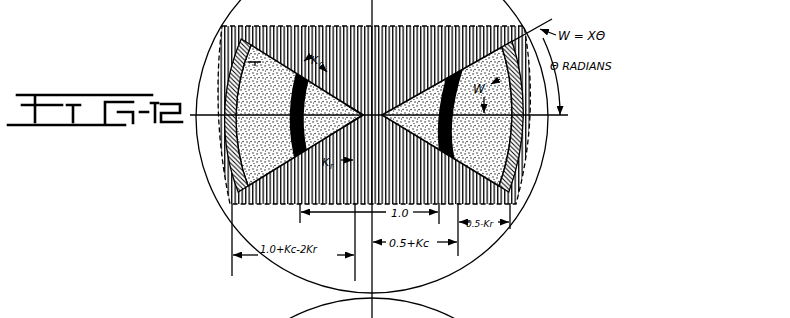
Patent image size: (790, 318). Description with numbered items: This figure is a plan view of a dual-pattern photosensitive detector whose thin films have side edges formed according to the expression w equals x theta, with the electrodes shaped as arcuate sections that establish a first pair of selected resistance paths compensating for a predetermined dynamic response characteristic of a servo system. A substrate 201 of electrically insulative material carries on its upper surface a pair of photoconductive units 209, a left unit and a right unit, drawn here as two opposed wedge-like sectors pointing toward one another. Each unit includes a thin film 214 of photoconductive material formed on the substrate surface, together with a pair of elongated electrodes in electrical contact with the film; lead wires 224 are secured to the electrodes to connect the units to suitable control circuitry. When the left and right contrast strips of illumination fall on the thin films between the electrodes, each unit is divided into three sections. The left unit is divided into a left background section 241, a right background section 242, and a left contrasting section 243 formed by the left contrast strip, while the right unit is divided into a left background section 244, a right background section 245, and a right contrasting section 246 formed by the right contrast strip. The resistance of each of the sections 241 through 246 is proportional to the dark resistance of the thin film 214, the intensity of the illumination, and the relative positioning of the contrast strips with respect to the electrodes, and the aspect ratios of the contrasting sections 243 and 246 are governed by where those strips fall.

The substrate 201 is at (223, 210).
The photoconductive units 209 is at (268, 39).
The thin film 214 is at (243, 68).
The lead wires 224 is at (230, 116).
The left background section 241 is at (300, 70).
The right background section 242 is at (361, 110).
The left contrasting section 243 is at (289, 143).
The left background section 244 is at (374, 160).
The right background section 245 is at (478, 66).
The right contrasting section 246 is at (459, 130).